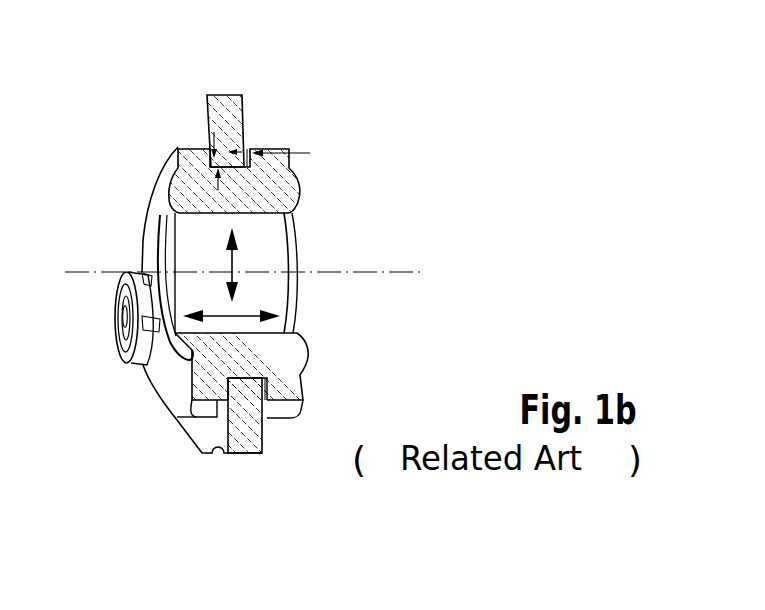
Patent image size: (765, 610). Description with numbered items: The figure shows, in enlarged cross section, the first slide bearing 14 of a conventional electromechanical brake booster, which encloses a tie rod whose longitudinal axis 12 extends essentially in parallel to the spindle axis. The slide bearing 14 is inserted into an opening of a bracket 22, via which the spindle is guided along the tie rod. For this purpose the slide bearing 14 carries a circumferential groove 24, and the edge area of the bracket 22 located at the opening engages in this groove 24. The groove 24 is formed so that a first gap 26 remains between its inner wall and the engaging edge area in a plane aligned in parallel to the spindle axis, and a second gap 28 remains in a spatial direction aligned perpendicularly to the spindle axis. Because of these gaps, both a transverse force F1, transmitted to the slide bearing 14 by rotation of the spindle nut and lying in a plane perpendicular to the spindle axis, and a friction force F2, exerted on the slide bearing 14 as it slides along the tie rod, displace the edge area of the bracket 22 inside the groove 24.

The longitudinal axis 12 is at (393, 268).
The first slide bearing 14 is at (270, 237).
The bracket 22 is at (218, 107).
The circumferential groove 24 is at (248, 378).
The first gap 26 is at (299, 152).
The second gap 28 is at (214, 138).
The transverse force F1 is at (232, 267).
The friction force F2 is at (246, 315).